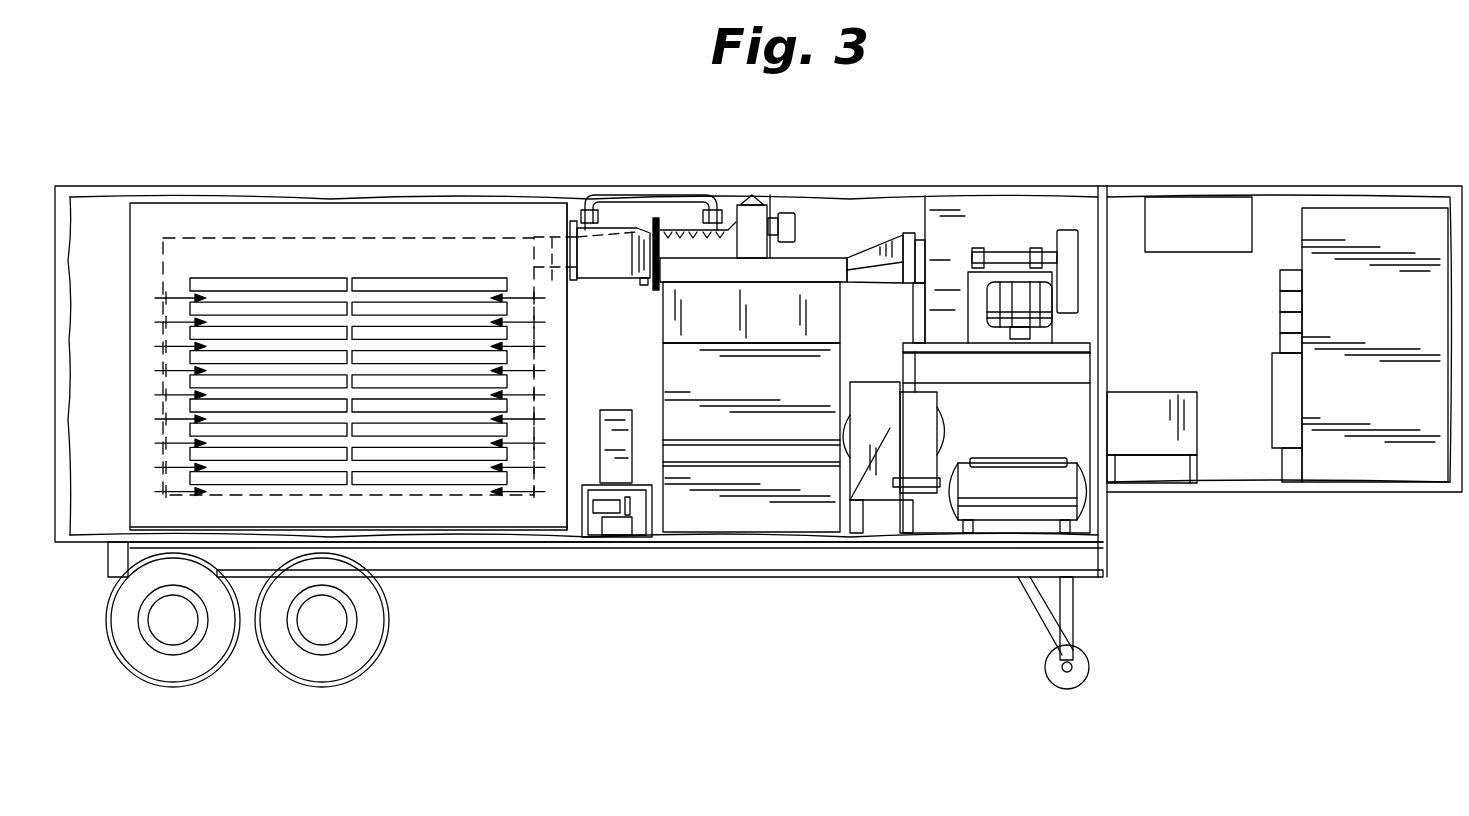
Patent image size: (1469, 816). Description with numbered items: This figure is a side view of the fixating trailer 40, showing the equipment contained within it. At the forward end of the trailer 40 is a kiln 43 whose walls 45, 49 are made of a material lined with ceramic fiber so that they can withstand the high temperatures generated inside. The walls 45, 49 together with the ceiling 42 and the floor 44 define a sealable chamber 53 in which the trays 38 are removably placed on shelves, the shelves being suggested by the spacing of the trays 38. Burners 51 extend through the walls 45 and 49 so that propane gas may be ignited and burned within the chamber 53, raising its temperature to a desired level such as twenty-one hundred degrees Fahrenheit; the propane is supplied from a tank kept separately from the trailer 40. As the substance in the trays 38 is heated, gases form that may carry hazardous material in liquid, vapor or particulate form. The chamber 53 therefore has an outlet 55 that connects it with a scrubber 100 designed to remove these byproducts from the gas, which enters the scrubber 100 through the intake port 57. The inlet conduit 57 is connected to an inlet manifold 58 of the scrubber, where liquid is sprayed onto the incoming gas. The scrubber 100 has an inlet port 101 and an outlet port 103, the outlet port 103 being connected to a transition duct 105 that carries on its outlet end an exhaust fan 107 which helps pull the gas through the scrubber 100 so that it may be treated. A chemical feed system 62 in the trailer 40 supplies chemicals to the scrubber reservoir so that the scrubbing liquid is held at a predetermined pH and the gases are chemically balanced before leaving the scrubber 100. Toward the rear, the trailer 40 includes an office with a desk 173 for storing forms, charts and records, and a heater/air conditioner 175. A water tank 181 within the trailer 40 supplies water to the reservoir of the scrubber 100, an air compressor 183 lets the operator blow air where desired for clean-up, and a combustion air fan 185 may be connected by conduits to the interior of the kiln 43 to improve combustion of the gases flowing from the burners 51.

The trailer 40 is at (1212, 98).
The ceiling 42 is at (318, 248).
The kiln 43 is at (112, 480).
The floor 44 is at (398, 512).
The wall 45 is at (133, 373).
The wall 49 is at (560, 383).
The burners 51 is at (168, 297).
The chamber 53 is at (256, 243).
The outlet 55 is at (553, 238).
The intake port 57 is at (616, 265).
The inlet manifold 58 is at (742, 243).
The chemical feed system 62 is at (594, 460).
The trays 38 is at (458, 480).
The scrubber 100 is at (760, 528).
The inlet port 101 is at (677, 230).
The outlet port 103 is at (845, 260).
The transition duct 105 is at (888, 236).
The exhaust fan 107 is at (950, 258).
The desk 173 is at (1153, 432).
The heater/air conditioner 175 is at (1210, 205).
The water tank 181 is at (1382, 450).
The air compressor 183 is at (1017, 510).
The combustion air fan 185 is at (880, 500).